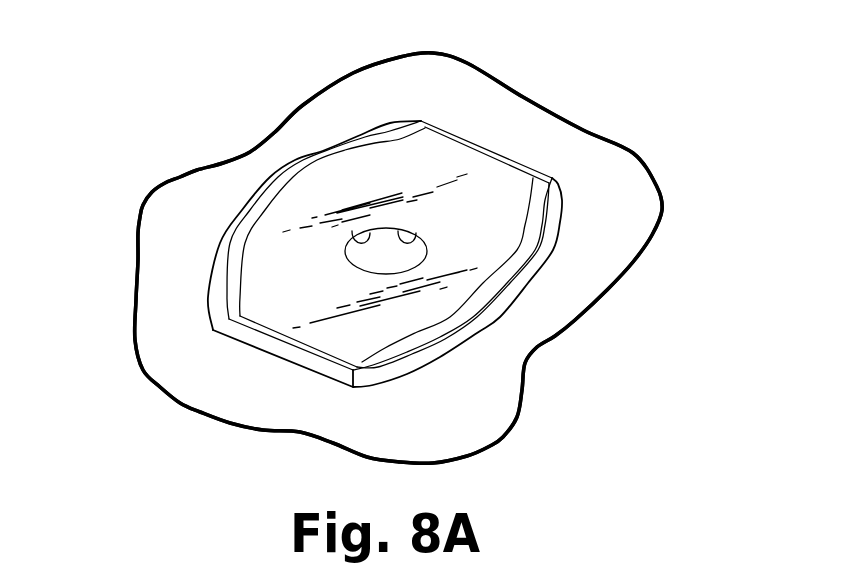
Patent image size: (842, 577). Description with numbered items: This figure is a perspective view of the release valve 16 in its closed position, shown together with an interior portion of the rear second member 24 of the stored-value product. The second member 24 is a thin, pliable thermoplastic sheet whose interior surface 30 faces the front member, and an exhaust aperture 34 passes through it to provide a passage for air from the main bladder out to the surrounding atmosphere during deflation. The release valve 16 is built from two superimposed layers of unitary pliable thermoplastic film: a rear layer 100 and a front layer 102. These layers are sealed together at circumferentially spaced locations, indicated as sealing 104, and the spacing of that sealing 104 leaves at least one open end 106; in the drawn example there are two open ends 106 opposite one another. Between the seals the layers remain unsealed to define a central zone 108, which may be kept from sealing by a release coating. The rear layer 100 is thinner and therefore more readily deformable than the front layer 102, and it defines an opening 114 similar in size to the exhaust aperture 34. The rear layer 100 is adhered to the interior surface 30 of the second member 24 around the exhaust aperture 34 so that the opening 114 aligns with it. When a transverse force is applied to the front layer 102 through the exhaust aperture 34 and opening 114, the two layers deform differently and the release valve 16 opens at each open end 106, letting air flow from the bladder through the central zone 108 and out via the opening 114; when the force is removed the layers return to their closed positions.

The release valve 16 is at (518, 197).
The second member 24 is at (620, 232).
The interior surface 30 is at (585, 281).
The exhaust aperture 34 is at (415, 232).
The rear layer 100 is at (221, 319).
The front layer 102 is at (268, 287).
The sealing 104 is at (277, 207).
The open end 106 is at (452, 133).
The central zone 108 is at (400, 327).
The opening 114 is at (369, 232).